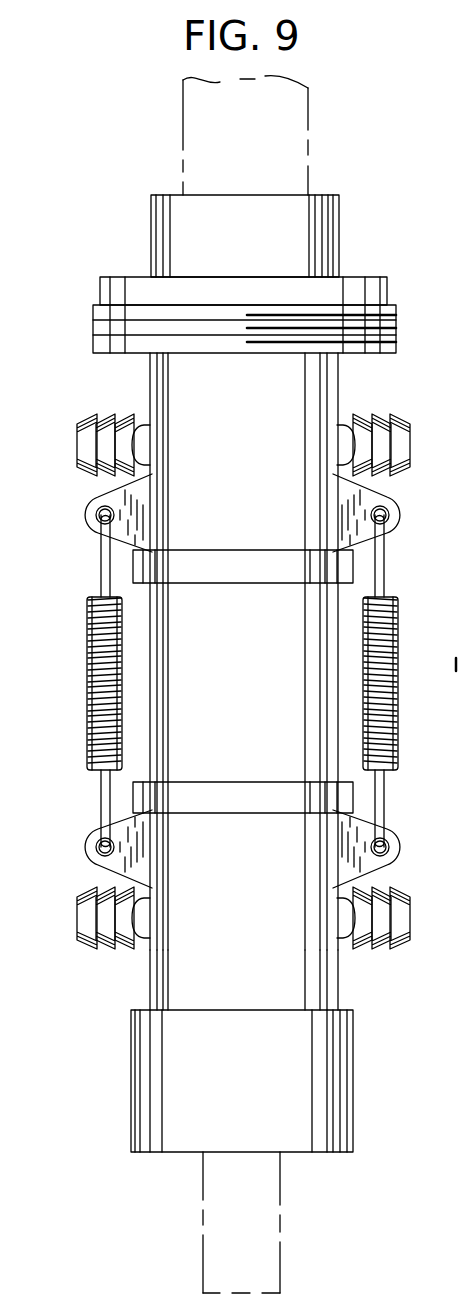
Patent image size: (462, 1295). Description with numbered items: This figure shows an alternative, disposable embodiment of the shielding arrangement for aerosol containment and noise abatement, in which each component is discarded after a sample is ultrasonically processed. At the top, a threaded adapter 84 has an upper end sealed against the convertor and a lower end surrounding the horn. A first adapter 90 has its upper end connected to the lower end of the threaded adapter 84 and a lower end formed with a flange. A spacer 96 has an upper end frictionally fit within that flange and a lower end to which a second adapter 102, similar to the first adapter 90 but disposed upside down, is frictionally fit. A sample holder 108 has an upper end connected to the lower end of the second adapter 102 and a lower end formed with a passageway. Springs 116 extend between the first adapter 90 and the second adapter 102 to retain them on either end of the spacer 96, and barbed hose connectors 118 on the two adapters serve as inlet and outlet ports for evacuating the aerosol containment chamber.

The threaded adapter 84 is at (353, 288).
The first adapter 90 is at (317, 397).
The spacer 96 is at (145, 725).
The second adapter 102 is at (280, 980).
The sample holder 108 is at (318, 1082).
The springs 116 is at (90, 632).
The barbed hose connectors 118 is at (403, 445).